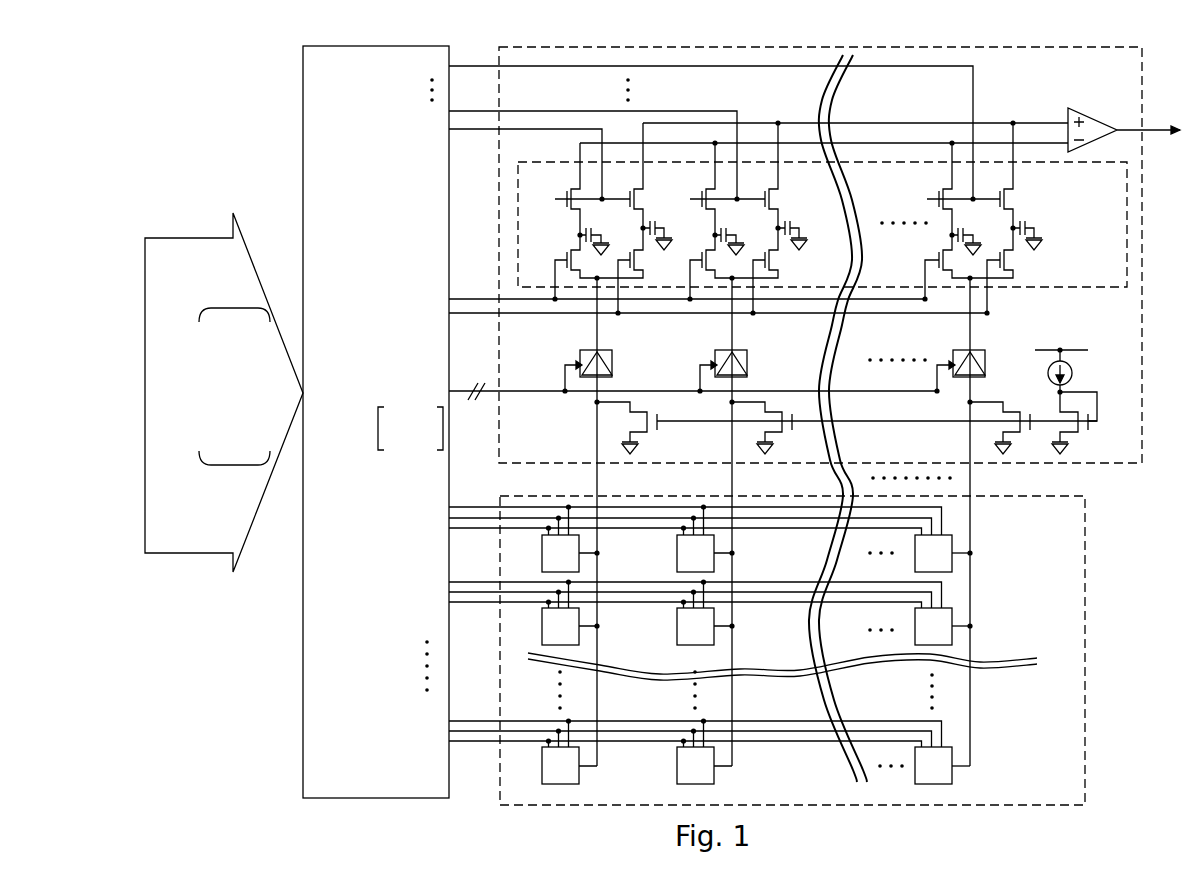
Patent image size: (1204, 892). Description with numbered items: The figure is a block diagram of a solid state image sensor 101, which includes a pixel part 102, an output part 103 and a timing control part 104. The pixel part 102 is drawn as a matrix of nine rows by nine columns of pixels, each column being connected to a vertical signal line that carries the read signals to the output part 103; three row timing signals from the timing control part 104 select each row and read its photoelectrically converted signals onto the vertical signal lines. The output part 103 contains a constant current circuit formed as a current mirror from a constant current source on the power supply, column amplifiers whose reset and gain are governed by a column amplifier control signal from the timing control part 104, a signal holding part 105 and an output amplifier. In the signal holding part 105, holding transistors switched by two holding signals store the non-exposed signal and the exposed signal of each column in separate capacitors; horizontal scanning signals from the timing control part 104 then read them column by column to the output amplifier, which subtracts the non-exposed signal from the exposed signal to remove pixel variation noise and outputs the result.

The solid state image sensor 101 is at (246, 117).
The pixel part 102 is at (1085, 578).
The output part 103 is at (1142, 78).
The timing control part 104 is at (303, 184).
The signal holding part 105 is at (1066, 288).